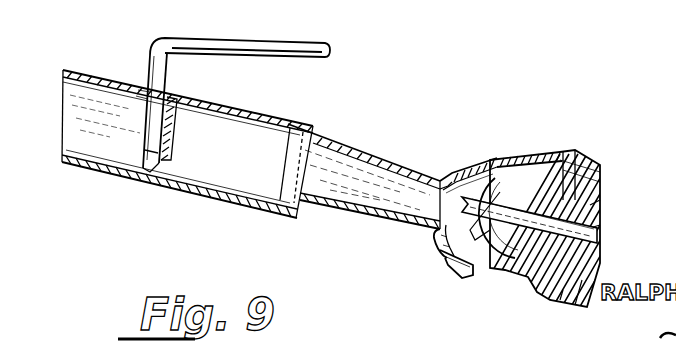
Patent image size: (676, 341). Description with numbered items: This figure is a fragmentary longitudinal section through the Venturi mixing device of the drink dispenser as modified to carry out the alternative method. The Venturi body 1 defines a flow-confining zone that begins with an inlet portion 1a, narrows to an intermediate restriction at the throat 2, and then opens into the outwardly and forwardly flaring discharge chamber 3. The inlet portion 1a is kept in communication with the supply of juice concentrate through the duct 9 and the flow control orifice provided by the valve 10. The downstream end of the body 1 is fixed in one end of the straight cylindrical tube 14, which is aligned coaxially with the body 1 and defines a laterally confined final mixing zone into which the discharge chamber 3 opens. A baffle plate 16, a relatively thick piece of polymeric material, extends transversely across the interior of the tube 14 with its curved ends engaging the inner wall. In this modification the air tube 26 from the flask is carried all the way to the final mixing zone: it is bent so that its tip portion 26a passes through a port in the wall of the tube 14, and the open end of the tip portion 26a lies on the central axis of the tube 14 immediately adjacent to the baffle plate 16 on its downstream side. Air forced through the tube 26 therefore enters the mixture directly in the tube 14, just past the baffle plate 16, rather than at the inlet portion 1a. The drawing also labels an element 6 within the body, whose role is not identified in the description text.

The body 1 is at (522, 160).
The inlet portion 1a is at (477, 190).
The throat 2 is at (430, 207).
The discharge chamber 3 is at (352, 148).
The stem/spring assembly 6 is at (507, 248).
The duct 9 is at (457, 268).
The valve 10 is at (161, 18).
The tube 14 is at (118, 80).
The baffle plate 16 is at (170, 146).
The tube 26 is at (208, 42).
The tip portion 26a is at (147, 134).